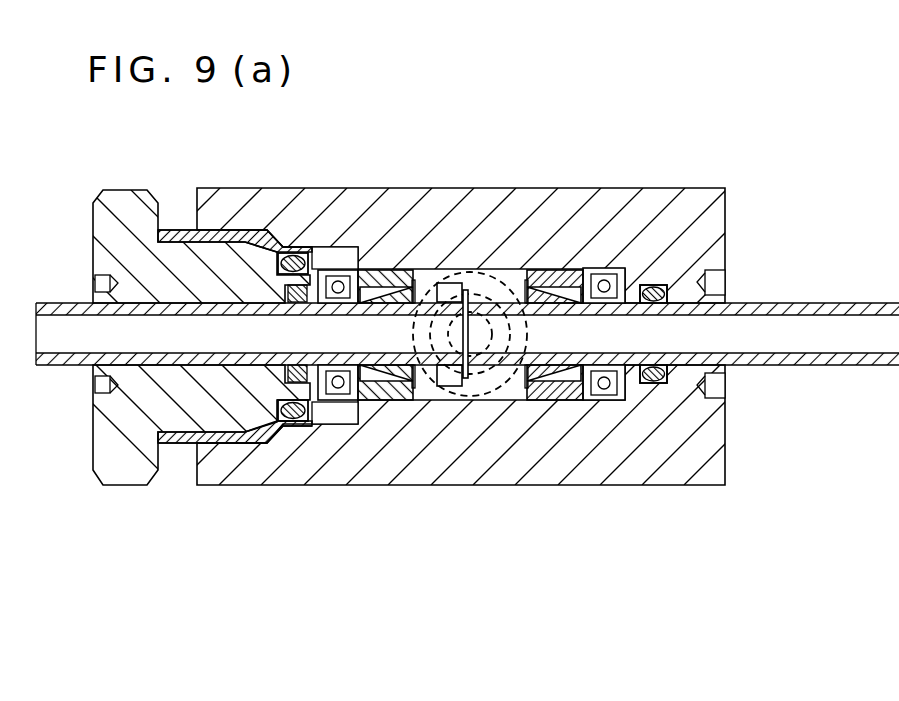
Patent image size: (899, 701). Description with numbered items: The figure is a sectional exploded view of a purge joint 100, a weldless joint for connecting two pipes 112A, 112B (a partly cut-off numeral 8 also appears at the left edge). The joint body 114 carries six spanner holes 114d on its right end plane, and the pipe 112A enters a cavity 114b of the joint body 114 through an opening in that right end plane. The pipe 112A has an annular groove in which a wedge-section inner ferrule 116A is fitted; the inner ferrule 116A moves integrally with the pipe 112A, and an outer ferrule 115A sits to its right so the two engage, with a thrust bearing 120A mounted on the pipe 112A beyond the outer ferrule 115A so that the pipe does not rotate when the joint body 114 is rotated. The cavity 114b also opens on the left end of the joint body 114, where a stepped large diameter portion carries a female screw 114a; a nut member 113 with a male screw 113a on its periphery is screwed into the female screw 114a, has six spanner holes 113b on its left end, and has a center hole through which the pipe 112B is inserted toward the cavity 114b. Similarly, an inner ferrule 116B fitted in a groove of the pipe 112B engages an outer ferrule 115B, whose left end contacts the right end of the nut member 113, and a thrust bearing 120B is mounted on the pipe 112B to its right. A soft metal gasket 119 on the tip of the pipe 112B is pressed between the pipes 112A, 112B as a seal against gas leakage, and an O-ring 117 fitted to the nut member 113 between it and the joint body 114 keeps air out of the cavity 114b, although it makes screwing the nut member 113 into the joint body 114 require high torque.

The purge joint 100 is at (575, 165).
The cut-off numeral 8 is at (6, 187).
The pipe 112A is at (773, 366).
The pipe 112B is at (52, 368).
The nut member 113 is at (133, 467).
The male screw 113a is at (165, 442).
The spanner holes 113b is at (100, 281).
The joint body 114 is at (682, 218).
The female screw 114a is at (223, 443).
The cavity 114b is at (530, 400).
The spanner holes 114d is at (727, 387).
The outer ferrule 115A is at (548, 400).
The outer ferrule 115B is at (383, 400).
The inner ferrule 116A is at (521, 292).
The inner ferrule 116B is at (372, 273).
The O-ring 117 is at (290, 421).
The gasket 119 is at (465, 378).
The thrust bearing 120A is at (610, 400).
The thrust bearing 120B is at (338, 400).